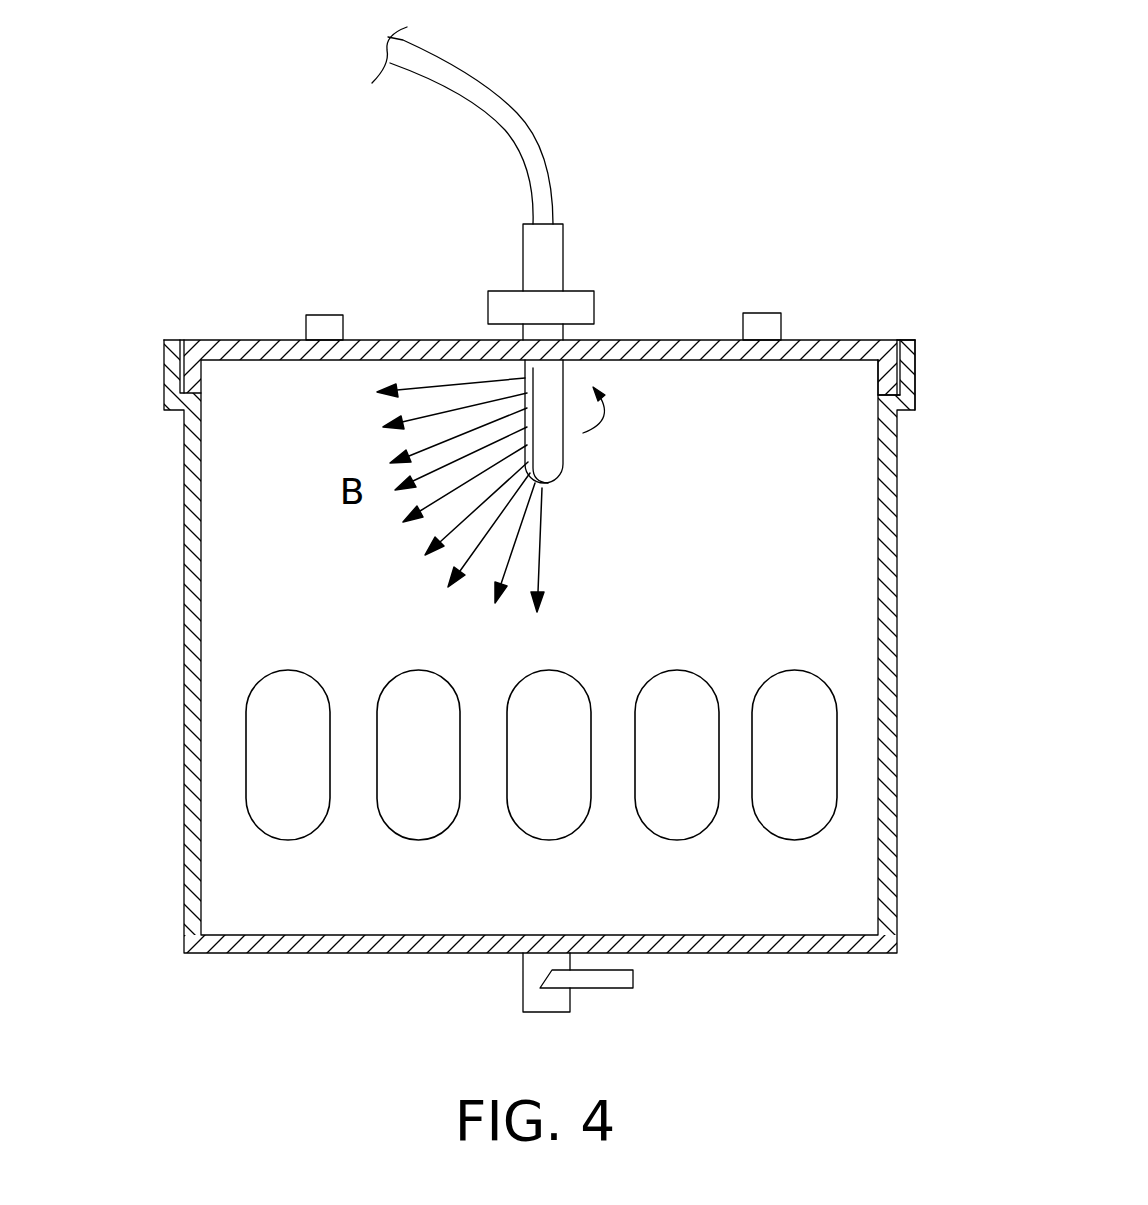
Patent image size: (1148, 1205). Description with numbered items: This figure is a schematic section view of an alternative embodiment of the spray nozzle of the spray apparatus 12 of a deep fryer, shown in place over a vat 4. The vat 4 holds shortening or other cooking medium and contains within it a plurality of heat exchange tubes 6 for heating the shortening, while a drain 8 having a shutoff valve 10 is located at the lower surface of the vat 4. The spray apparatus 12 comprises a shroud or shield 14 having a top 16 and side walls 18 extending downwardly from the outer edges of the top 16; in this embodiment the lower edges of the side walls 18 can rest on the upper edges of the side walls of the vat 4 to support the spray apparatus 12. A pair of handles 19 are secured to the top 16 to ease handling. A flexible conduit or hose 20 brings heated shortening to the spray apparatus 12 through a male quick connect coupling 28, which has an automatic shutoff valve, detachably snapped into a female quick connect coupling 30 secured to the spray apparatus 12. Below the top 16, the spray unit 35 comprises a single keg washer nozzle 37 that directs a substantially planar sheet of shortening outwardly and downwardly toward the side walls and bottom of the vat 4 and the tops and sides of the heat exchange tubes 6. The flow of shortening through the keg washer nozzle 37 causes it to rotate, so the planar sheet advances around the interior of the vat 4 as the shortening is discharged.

The vat 4 is at (185, 855).
The heat exchange tubes 6 is at (787, 817).
The drain 8 is at (523, 987).
The shutoff valve 10 is at (610, 988).
The spray apparatus 12 is at (703, 127).
The shroud or shield 14 is at (852, 341).
The top 16 is at (410, 340).
The side walls 18 is at (877, 373).
The handles 19 is at (322, 313).
The flexible conduit or hose 20 is at (515, 112).
The male quick connect coupling 28 is at (563, 247).
The female quick connect coupling 30 is at (594, 305).
The spray unit 35 is at (628, 442).
The keg washer nozzle 37 is at (545, 452).